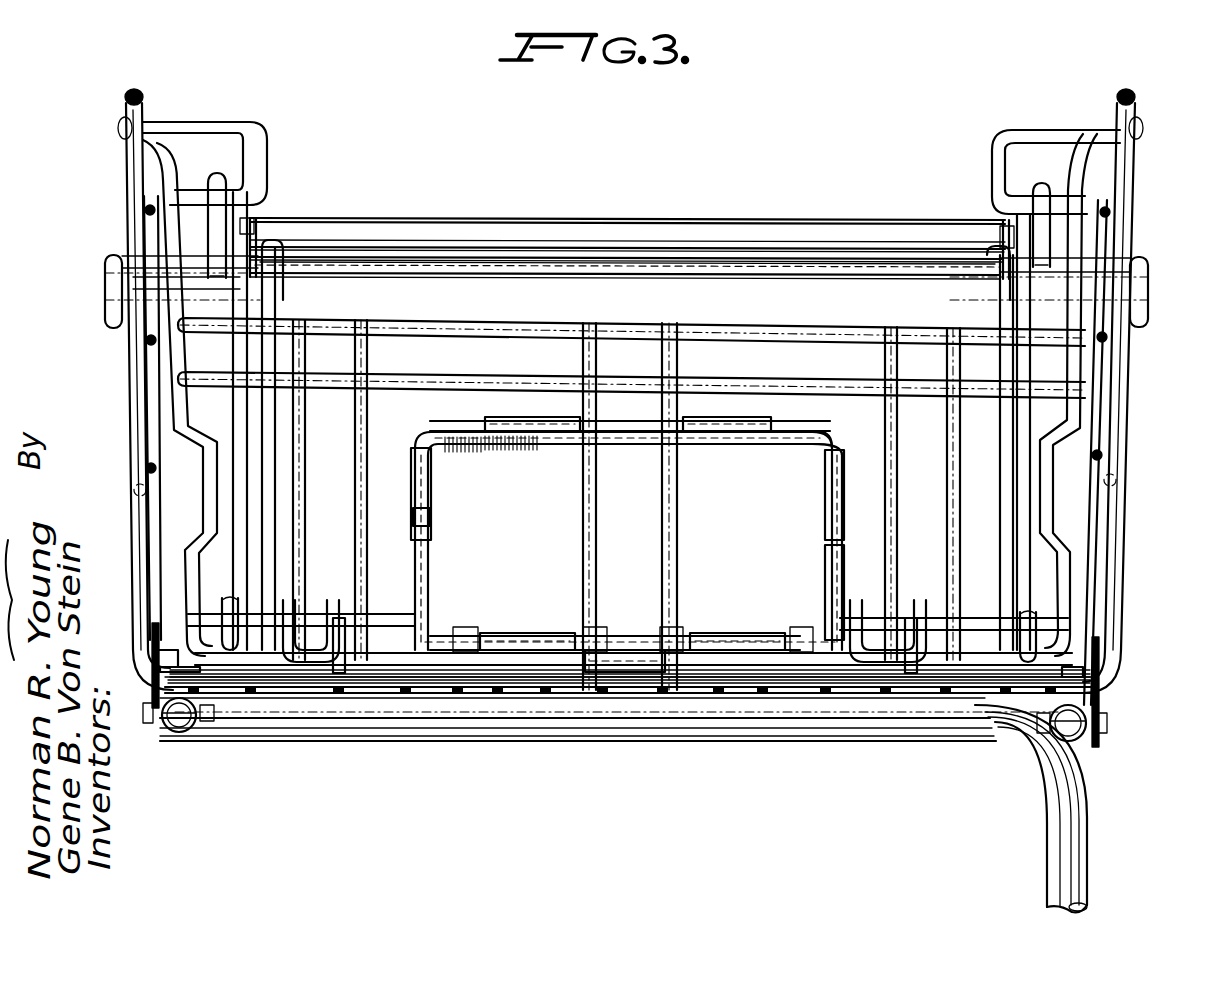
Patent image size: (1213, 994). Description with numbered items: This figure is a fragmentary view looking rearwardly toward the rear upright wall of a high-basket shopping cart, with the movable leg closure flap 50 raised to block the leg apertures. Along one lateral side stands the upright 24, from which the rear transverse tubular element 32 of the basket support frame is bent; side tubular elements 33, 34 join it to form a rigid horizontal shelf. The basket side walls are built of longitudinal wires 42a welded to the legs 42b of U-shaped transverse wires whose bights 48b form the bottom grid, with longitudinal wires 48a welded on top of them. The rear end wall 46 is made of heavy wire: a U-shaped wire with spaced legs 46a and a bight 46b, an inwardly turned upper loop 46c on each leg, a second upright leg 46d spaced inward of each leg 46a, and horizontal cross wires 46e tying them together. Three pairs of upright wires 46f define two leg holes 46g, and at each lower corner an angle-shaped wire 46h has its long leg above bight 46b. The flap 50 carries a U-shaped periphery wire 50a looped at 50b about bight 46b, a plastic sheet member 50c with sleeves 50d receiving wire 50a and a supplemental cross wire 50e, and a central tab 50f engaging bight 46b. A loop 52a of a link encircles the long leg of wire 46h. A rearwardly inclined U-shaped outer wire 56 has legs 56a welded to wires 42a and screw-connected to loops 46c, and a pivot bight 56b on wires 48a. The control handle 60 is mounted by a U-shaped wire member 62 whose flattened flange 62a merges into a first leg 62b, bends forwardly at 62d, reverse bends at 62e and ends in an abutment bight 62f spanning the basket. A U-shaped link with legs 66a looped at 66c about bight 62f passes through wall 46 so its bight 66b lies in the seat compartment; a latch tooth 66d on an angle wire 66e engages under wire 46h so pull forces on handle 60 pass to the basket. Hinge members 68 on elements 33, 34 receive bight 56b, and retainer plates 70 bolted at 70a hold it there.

The upright 24 is at (1087, 853).
The transverse tubular element 32 is at (612, 733).
The side tubular element 33 is at (170, 734).
The side tubular element 34 is at (1085, 746).
The longitudinally extending wires 42a is at (145, 211).
The legs of U-shaped transverse wires 42b is at (160, 541).
The rear upright end wall 46 is at (496, 326).
The legs 46a is at (205, 497).
The bight 46b is at (790, 667).
The upper loop 46c is at (310, 105).
The second upright leg 46d is at (243, 302).
The horizontal cross wires 46e is at (393, 382).
The upright wires 46f is at (362, 412).
The leg holes 46g is at (514, 414).
The angle shaped wire 46h is at (312, 616).
The longitudinally extending wires 48a is at (545, 690).
The bights 48b is at (413, 702).
The leg closure flap 50 is at (628, 541).
The periphery wire 50a is at (830, 443).
The pivot loops 50b is at (455, 636).
The plastic sheet member 50c is at (420, 516).
The rings or sleeves 50d is at (417, 458).
The supplemental cross wire 50e is at (470, 632).
The central tab 50f is at (640, 652).
The loop 52a is at (1030, 612).
The U-shaped wire 56 is at (1132, 460).
The upright legs 56a is at (138, 470).
The pivot bight 56b is at (262, 680).
The control handle 60 is at (525, 216).
The U-shaped wire member 62 is at (385, 253).
The flattened terminal flange 62a is at (252, 238).
The first leg 62b is at (262, 245).
The forward bend 62d is at (108, 315).
The reverse bend 62e is at (112, 262).
The abutment bight 62f is at (417, 262).
The legs 66a is at (275, 510).
The bight 66b is at (570, 682).
The loops 66c is at (268, 252).
The latch lug or tooth 66d is at (345, 606).
The angle-shaped wire 66e is at (890, 690).
The hinge members 68 is at (168, 660).
The retainer plates 70 is at (150, 628).
The bolts 70a is at (218, 713).